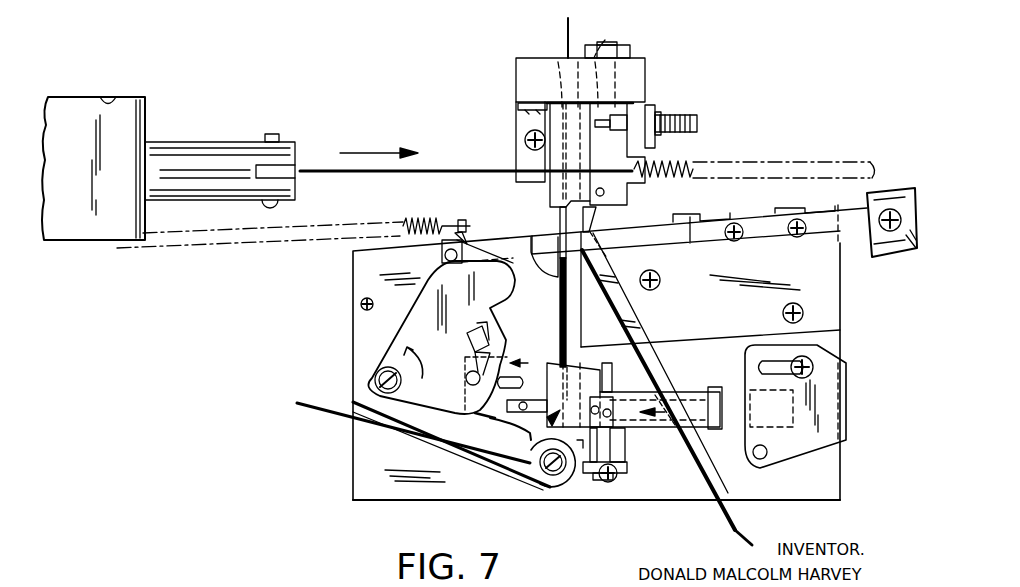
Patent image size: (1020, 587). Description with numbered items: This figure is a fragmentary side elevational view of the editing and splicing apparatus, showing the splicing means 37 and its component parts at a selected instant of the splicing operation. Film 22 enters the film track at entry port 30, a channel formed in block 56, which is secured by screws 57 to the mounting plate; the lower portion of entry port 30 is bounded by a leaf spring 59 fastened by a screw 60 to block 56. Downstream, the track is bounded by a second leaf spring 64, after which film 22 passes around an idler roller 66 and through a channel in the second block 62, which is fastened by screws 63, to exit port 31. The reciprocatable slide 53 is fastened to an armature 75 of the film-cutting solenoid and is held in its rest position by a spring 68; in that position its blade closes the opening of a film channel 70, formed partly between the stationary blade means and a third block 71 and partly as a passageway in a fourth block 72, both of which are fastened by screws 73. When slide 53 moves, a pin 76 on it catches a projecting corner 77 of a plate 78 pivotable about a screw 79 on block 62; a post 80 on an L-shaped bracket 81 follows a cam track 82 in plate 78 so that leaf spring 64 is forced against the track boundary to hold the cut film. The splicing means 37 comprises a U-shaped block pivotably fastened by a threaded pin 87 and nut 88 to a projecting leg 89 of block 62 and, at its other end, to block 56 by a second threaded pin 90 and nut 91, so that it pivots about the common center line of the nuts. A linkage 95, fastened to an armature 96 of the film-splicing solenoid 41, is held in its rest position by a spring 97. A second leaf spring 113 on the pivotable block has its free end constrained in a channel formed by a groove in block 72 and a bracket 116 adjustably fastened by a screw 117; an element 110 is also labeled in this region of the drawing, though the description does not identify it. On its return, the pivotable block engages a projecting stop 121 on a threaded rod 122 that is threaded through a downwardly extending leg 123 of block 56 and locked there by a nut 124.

The film 22 is at (566, 38).
The entry port 30 is at (596, 44).
The exit port 31 is at (357, 430).
The splicing means 37 is at (535, 426).
The film-splicing solenoid 41 is at (112, 100).
The reciprocatable slide 53 is at (752, 222).
The block 56 is at (648, 84).
The screws 57 is at (524, 141).
The leaf spring 59 is at (556, 215).
The screw 60 is at (518, 109).
The second block 62 is at (362, 277).
The screws 63 is at (361, 306).
The second leaf spring 64 is at (556, 234).
The idler roller 66 is at (556, 478).
The spring 68 is at (448, 216).
The film channel 70 is at (718, 500).
The third block 71 is at (838, 270).
The fourth block 72 is at (842, 462).
The screws 73 is at (662, 276).
The armature 75 is at (908, 190).
The pin 76 is at (462, 240).
The projecting corner 77 is at (442, 258).
The plate 78 is at (405, 325).
The screw 79 is at (374, 381).
The post 80 is at (470, 360).
The L-shaped bracket 81 is at (492, 420).
The cam track 82 is at (476, 325).
The threaded pin 87 is at (600, 480).
The nut 88 is at (617, 476).
The projecting leg 89 is at (630, 455).
The second threaded pin 90 is at (646, 64).
The nut 91 is at (632, 48).
The linkage 95 is at (315, 166).
The armature 96 is at (192, 150).
The spring 97 is at (693, 162).
The slide bar 110 is at (660, 427).
The second leaf spring 113 is at (735, 420).
The bracket 116 is at (830, 383).
The screw 117 is at (815, 362).
The projecting stop 121 is at (645, 110).
The threaded rod 122 is at (699, 121).
The downwardly extending leg 123 is at (662, 133).
The nut 124 is at (656, 121).